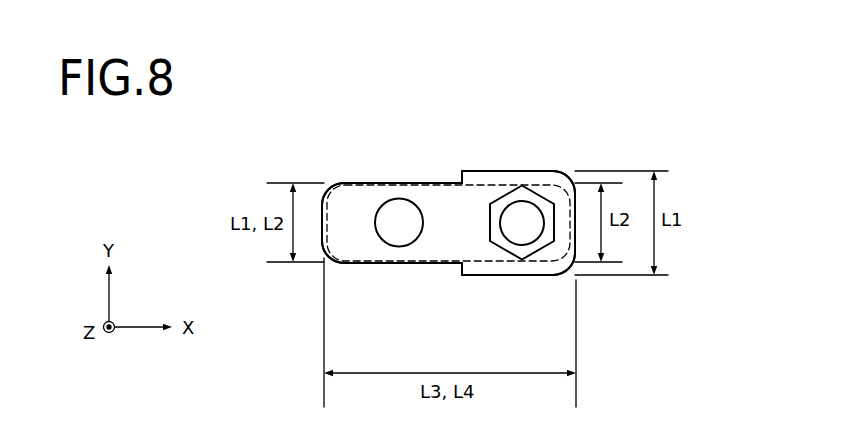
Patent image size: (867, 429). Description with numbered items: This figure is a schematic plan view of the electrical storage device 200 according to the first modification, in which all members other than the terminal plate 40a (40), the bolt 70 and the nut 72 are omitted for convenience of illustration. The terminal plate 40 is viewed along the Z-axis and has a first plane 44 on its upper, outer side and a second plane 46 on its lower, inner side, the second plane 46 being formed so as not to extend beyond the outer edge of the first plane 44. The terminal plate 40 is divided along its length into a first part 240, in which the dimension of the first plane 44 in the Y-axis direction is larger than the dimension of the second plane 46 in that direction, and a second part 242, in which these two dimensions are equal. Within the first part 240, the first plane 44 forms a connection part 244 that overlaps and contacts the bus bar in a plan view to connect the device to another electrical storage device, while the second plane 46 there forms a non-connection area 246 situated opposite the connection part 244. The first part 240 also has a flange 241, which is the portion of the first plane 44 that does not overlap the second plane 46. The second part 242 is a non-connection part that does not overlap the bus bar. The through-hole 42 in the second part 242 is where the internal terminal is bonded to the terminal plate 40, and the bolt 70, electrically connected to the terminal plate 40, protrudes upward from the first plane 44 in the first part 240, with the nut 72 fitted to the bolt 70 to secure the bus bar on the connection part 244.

The electrical storage device 200 is at (744, 86).
The terminal plate 40a is at (645, 188).
The terminal plate 40 is at (614, 132).
The first part 240 is at (484, 197).
The flange 241 is at (498, 177).
The second part 242 is at (365, 197).
The first plane 44 is at (499, 314).
The connection part 244 is at (477, 275).
The second plane 46 is at (448, 278).
The non-connection area 246 is at (503, 262).
The through-hole 42 is at (420, 221).
The nut 72 is at (508, 190).
The bolt 70 is at (528, 215).